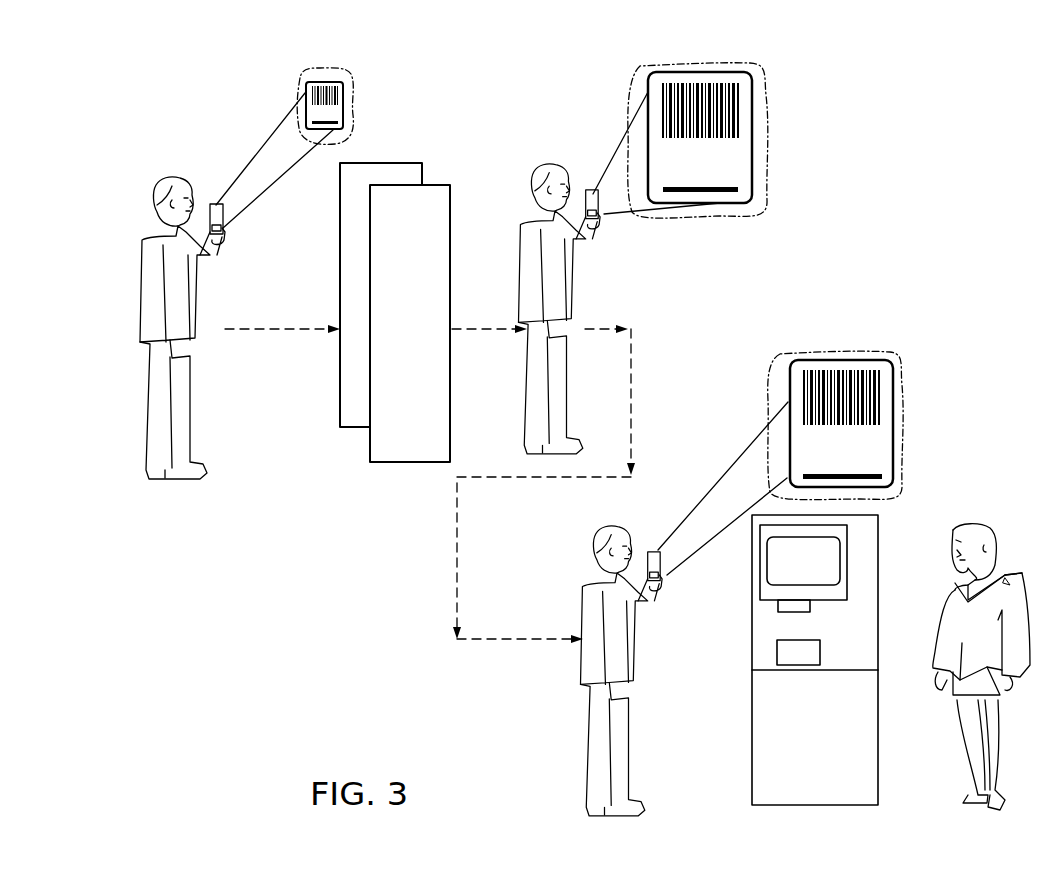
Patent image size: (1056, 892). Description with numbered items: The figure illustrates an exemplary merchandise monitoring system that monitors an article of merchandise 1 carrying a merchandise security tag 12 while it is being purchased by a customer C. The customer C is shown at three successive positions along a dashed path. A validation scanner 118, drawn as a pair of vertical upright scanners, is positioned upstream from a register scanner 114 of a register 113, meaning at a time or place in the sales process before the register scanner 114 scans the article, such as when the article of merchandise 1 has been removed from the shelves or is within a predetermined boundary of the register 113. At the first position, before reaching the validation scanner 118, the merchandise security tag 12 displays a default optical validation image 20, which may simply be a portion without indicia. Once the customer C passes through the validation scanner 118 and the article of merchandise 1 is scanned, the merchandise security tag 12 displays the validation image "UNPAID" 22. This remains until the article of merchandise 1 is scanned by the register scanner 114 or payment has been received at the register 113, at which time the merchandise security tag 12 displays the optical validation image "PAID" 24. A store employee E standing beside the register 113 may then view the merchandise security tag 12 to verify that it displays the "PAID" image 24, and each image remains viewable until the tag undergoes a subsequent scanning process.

The article of merchandise 1 is at (214, 203).
The merchandise security tag 12 is at (331, 72).
The default optical validation image 20 is at (341, 119).
The validation image "UNPAID" 22 is at (745, 178).
The optical validation image "PAID" 24 is at (892, 457).
The validation scanner 118 is at (433, 184).
The register 113 is at (865, 559).
The register scanner 114 is at (808, 650).
The customer C is at (140, 236).
The store employee E is at (1025, 582).